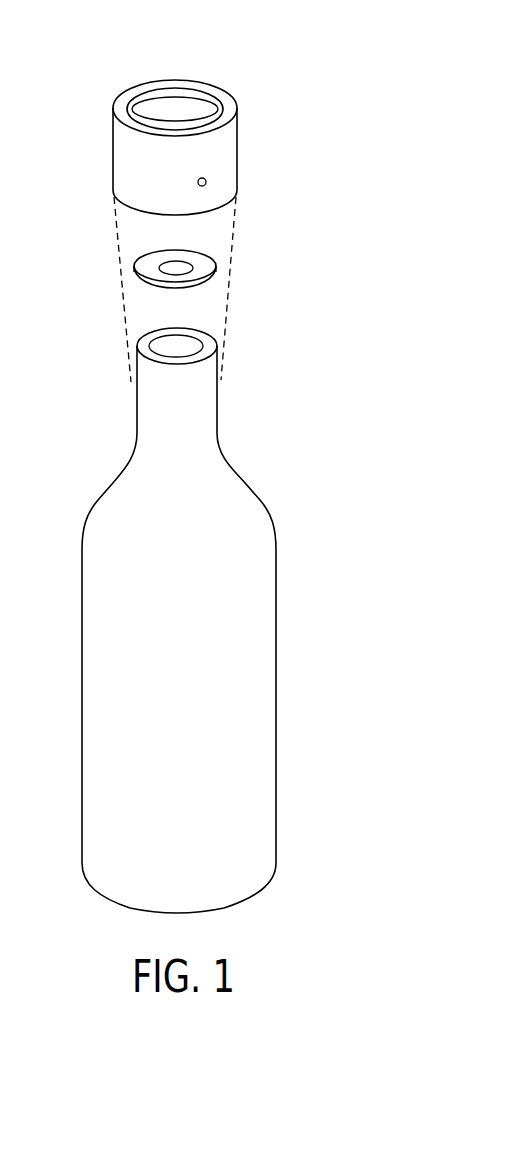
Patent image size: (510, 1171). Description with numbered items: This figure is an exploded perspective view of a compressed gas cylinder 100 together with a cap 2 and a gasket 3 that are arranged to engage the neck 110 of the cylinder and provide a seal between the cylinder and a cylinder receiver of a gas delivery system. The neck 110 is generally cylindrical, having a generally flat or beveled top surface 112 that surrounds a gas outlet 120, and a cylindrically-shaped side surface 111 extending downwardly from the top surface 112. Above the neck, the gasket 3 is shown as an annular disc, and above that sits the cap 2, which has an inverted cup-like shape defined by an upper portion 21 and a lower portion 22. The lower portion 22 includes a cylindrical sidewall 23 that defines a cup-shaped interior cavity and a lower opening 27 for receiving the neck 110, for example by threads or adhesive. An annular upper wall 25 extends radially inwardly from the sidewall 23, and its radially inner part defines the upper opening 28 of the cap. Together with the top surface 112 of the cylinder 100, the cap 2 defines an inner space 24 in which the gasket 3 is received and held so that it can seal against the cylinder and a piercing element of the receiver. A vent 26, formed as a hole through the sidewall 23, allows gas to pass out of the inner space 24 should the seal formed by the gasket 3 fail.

The cap 2 is at (187, 124).
The upper portion 21 is at (120, 105).
The lower portion 22 is at (120, 157).
The sidewall 23 is at (230, 183).
The inner space 24 is at (193, 107).
The upper wall 25 is at (152, 88).
The vent 26 is at (206, 182).
The lower opening 27 is at (132, 215).
The upper opening 28 is at (188, 95).
The gasket 3 is at (207, 268).
The compressed gas cylinder 100 is at (223, 610).
The neck 110 is at (189, 370).
The side surface 111 is at (137, 393).
The top surface 112 is at (145, 348).
The gas outlet 120 is at (180, 347).